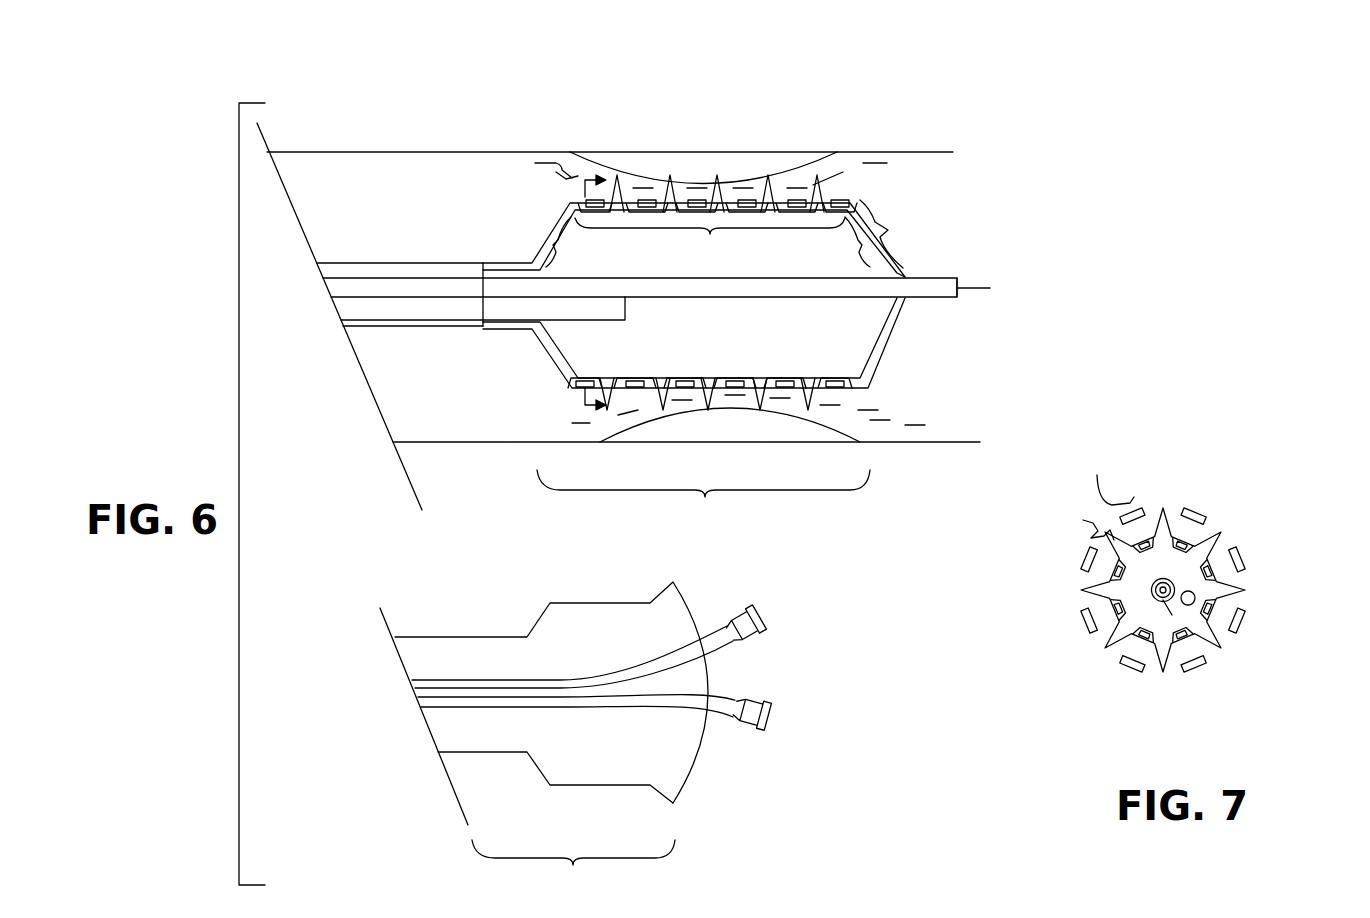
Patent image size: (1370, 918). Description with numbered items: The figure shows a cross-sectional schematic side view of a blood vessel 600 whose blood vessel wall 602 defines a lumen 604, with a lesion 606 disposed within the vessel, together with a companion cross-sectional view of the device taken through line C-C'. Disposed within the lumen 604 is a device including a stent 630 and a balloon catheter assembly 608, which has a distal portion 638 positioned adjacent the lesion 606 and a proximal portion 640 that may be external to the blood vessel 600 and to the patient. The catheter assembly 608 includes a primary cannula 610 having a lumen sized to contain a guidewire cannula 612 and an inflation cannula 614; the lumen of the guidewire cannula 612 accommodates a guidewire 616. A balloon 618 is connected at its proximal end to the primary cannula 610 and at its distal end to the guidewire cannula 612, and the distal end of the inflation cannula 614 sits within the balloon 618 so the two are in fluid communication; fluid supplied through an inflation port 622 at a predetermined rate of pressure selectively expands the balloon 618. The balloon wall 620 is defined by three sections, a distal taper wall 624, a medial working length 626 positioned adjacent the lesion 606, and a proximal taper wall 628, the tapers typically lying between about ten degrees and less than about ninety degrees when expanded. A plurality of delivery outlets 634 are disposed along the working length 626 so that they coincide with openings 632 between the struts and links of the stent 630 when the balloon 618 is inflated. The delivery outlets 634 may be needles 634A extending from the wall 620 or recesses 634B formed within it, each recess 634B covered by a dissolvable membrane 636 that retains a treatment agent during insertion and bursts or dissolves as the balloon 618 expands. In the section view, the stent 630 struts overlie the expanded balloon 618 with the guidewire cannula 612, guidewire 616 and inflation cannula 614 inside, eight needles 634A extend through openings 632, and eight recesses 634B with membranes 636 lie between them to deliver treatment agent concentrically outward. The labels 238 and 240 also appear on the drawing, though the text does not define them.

In FIG. 6, the blood vessel 600 is at (880, 120).
In FIG. 6, the blood vessel wall 602 is at (930, 150).
In FIG. 6, the lumen 604 is at (998, 213).
In FIG. 6, the lesion 606 is at (718, 180).
In FIG. 6, the balloon catheter assembly 608 is at (522, 362).
In FIG. 7, the balloon catheter assembly 608 is at (1203, 490).
In FIG. 6, the primary cannula 610 is at (440, 263).
In FIG. 6, the guidewire cannula 612 is at (355, 290).
In FIG. 7, the guidewire cannula 612 is at (1150, 600).
In FIG. 6, the inflation cannula 614 is at (397, 305).
In FIG. 7, the inflation cannula 614 is at (1196, 600).
In FIG. 6, the guidewire 616 is at (983, 287).
In FIG. 7, the guidewire 616 is at (1161, 600).
In FIG. 6, the balloon 618 is at (870, 325).
In FIG. 7, the balloon 618 is at (1172, 615).
In FIG. 6, the balloon wall 620 is at (890, 265).
In FIG. 7, the balloon wall 620 is at (1240, 560).
In FIG. 6, the inflation port 622 is at (775, 715).
In FIG. 6, the distal taper wall 624 is at (840, 242).
In FIG. 6, the medial working length 626 is at (710, 235).
In FIG. 6, the proximal taper wall 628 is at (575, 242).
In FIG. 6, the stent 630 is at (547, 163).
In FIG. 7, the stent 630 is at (1104, 477).
In FIG. 6, the openings 632 is at (561, 178).
In FIG. 7, the openings 632 is at (1082, 522).
In FIG. 6, the delivery outlets 634 is at (857, 396).
In FIG. 6, the needles 634A is at (835, 160).
In FIG. 7, the needles 634A is at (1228, 540).
In FIG. 6, the recesses 634B is at (858, 210).
In FIG. 7, the recesses 634B is at (1190, 540).
In FIG. 6, the membrane 636 is at (850, 200).
In FIG. 7, the membrane 636 is at (1198, 535).
In FIG. 6, the distal portion 638 is at (686, 465).
In FIG. 6, the proximal portion 640 is at (573, 866).
In FIG. 6, the tapered section 238 is at (892, 234).
In FIG. 6, the lumen 240 is at (550, 200).